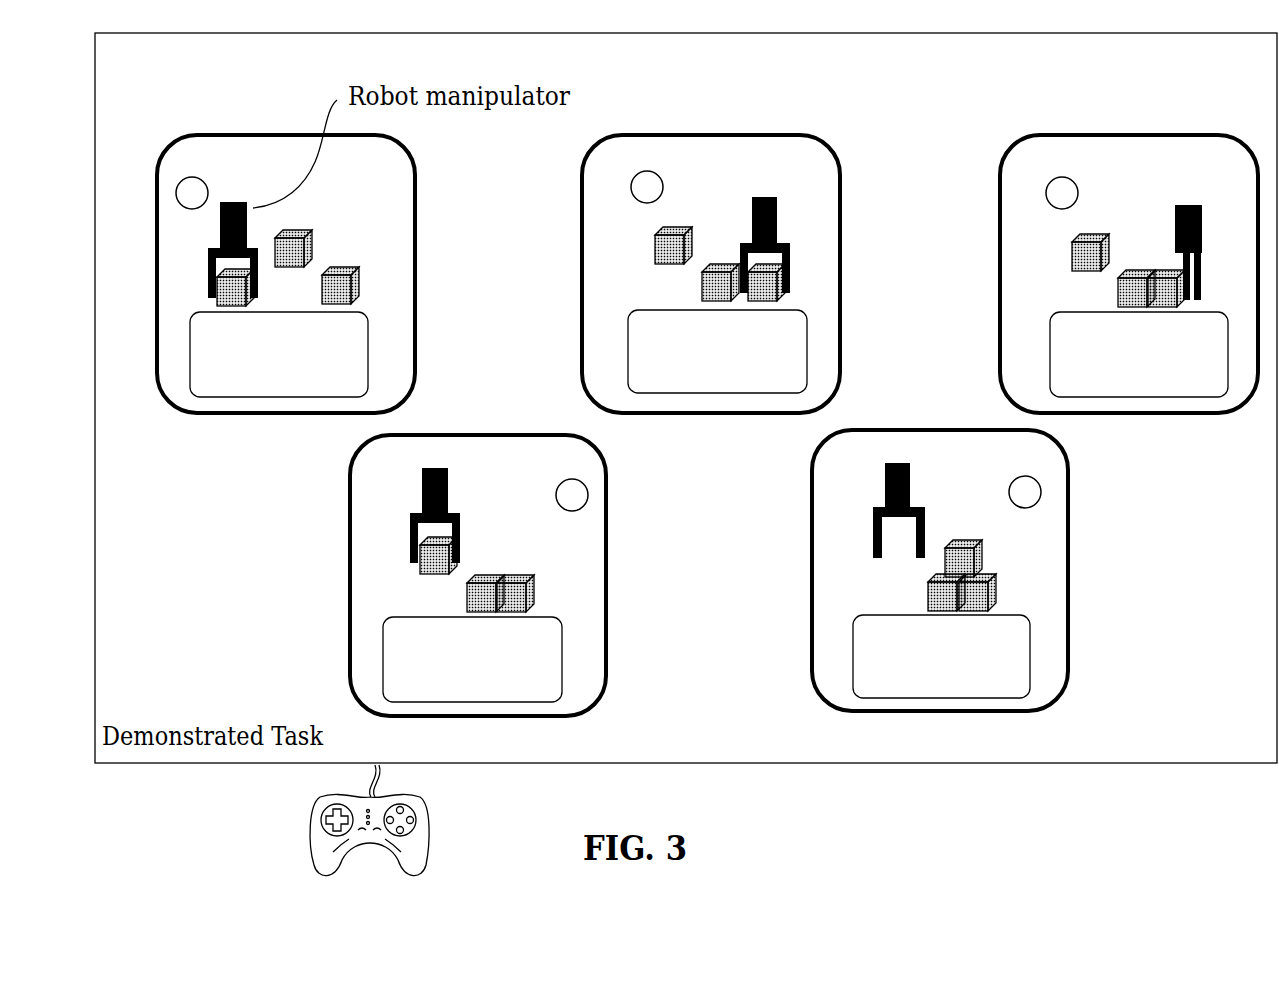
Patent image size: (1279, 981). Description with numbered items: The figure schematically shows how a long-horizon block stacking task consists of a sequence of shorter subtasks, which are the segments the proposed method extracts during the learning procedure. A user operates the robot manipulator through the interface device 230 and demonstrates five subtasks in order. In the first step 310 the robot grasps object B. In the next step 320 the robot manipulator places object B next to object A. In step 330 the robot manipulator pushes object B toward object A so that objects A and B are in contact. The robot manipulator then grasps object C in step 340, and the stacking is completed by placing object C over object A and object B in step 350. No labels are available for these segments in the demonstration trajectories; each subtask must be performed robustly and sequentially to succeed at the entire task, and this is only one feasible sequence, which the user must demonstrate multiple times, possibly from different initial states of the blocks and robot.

The first step 310 is at (153, 276).
The step of placing object B next to object A 320 is at (582, 274).
The step of pushing object B next to object A 330 is at (999, 271).
The step of grasping object C 340 is at (349, 583).
The step of placing object C over objects A and B 350 is at (811, 569).
The interface device 230 is at (311, 838).